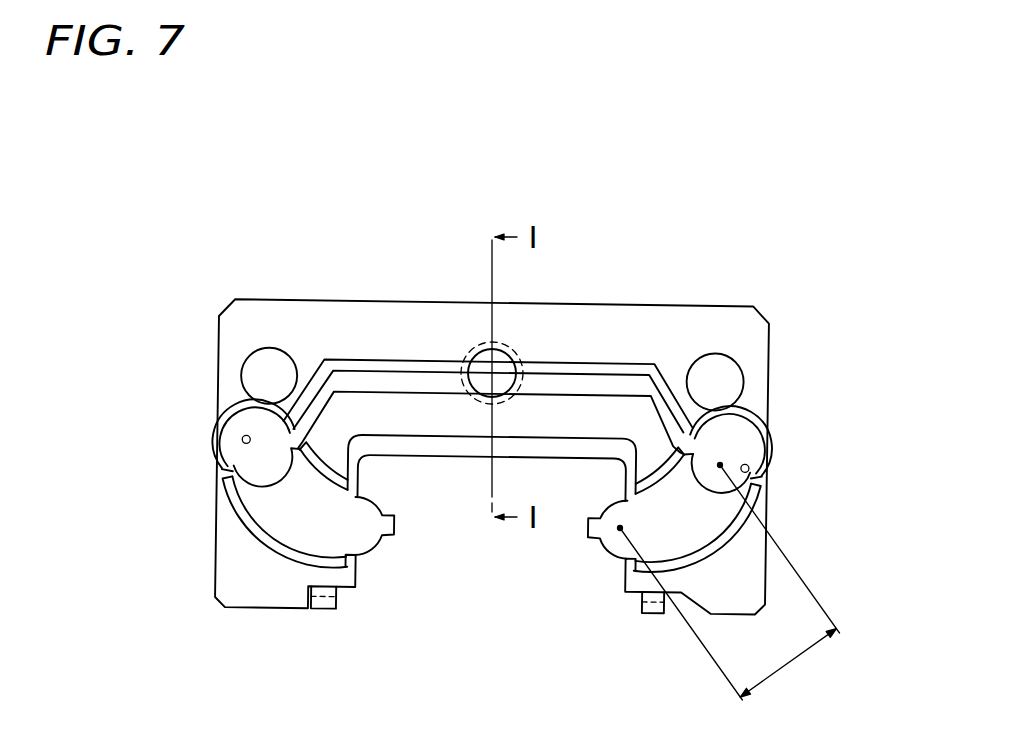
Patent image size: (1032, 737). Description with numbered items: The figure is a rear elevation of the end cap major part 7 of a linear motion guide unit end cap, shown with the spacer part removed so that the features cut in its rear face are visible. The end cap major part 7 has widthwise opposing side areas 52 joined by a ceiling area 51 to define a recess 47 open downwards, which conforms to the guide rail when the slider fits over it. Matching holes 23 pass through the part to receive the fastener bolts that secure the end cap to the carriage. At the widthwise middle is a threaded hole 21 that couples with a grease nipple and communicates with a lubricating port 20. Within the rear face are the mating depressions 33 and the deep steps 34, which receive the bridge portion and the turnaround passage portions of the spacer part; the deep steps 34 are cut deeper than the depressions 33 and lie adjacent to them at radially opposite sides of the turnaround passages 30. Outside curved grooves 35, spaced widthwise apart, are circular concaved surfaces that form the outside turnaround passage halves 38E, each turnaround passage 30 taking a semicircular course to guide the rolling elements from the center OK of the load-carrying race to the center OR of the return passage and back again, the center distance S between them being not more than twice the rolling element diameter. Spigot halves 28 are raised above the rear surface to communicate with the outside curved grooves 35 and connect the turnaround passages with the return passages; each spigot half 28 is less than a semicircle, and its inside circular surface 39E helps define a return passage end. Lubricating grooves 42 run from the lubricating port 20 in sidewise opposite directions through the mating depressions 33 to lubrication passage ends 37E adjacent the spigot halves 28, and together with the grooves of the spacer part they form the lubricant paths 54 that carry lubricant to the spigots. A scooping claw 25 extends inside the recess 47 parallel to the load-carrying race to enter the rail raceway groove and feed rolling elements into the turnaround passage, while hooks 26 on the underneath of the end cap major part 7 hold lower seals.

The end cap major part 7 is at (697, 300).
The lubricating port 20 is at (488, 378).
The threaded hole 21 is at (498, 365).
The matching hole 23 is at (731, 377).
The scooping claw 25 is at (603, 550).
The hook 26 is at (651, 615).
The spigot half 28 is at (767, 467).
The turnaround passage 30 is at (692, 512).
The mating depression 33 is at (382, 410).
The deep step 34 is at (688, 553).
The outside curved groove 35 is at (676, 528).
The lubrication passage end 37E is at (697, 429).
The turnaround passage half 38E is at (660, 540).
The inside circular surface 39E is at (752, 454).
The lubricating groove 42 is at (598, 385).
The recess 47 is at (453, 457).
The ceiling area 51 is at (572, 332).
The side area 52 is at (223, 490).
The lubricant path 54 is at (655, 388).
The center of the return passage OR is at (722, 464).
The center of the load-carrying race OK is at (618, 531).
The center distance S is at (730, 582).